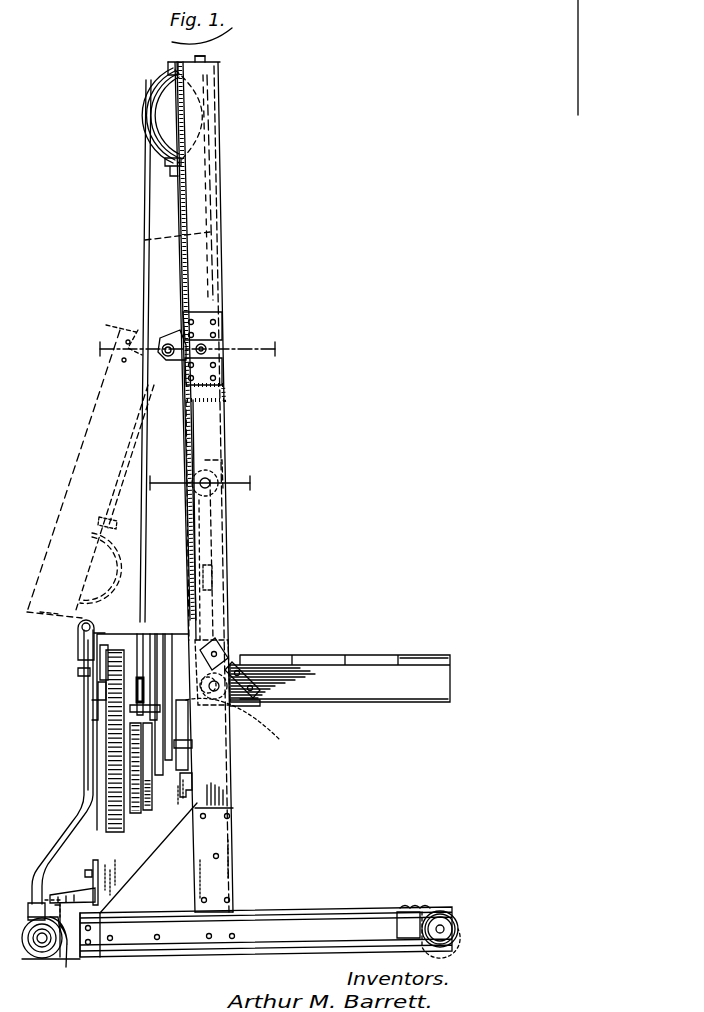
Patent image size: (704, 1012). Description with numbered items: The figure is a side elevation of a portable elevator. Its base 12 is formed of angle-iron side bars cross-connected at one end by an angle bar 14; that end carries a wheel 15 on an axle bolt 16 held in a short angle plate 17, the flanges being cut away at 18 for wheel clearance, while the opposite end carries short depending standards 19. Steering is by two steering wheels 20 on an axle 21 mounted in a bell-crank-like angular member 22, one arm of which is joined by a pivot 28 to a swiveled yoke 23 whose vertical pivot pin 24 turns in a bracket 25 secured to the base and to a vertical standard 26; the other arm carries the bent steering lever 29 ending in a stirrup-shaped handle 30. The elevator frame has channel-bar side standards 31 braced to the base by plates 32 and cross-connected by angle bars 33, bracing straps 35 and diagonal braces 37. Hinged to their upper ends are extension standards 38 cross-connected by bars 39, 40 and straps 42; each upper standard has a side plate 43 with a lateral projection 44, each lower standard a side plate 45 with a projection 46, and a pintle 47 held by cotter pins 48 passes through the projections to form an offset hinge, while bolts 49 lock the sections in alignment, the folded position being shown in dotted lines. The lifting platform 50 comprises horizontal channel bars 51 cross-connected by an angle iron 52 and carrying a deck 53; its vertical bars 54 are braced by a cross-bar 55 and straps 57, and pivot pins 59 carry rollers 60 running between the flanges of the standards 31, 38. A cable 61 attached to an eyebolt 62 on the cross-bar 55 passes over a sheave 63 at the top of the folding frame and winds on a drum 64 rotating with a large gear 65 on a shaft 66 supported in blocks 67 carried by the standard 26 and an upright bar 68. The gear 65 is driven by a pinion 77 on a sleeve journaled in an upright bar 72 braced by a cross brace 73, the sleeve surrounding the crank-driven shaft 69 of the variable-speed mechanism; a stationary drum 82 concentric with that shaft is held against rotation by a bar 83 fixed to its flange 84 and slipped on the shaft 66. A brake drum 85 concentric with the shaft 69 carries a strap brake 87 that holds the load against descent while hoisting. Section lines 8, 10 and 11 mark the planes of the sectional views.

The section line 8- 8 is at (202, 488).
The mast 10 is at (213, 298).
The section line 11- 11 is at (189, 348).
The base 12 is at (333, 904).
The angle bar 14 is at (148, 948).
The wheel 15 is at (443, 949).
The axle bolt 16 is at (440, 924).
The angle plate 17 is at (398, 940).
The cut-away 18 is at (418, 905).
The depending standards 19 is at (90, 956).
The steering wheels 20 is at (38, 948).
The axle 21 is at (38, 943).
The angular member 22 is at (48, 953).
The swiveled yoke 23 is at (64, 958).
The vertical pivot pin 24 is at (73, 893).
The bracket 25 is at (85, 874).
The vertical standard 26 is at (94, 880).
The pivot 28 is at (66, 968).
The steering lever 29 is at (84, 790).
The stirrup-shaped handle 30 is at (97, 688).
The side standards 31 is at (175, 738).
The plates 32 is at (220, 832).
The angle bars 33 is at (188, 806).
The bracing straps 35 is at (186, 500).
The diagonal braces 37 is at (192, 540).
The extension standards 38 is at (222, 236).
The bars 39 is at (107, 506).
The bars 40 is at (218, 66).
The straps 42 is at (168, 342).
The side plate 43 is at (212, 315).
The lateral projection 44 is at (172, 332).
The side plate 45 is at (222, 386).
The lateral projection 46 is at (168, 357).
The pintle 47 is at (162, 345).
The cotter pins 48 is at (164, 354).
The bolts 49 is at (208, 347).
The lifting platform 50 is at (341, 639).
The channel bars 51 is at (358, 703).
The angle iron 52 is at (248, 661).
The deck 53 is at (403, 658).
The vertical bars 54 is at (230, 548).
The cross-bar 55 is at (216, 574).
The straps 57 is at (240, 706).
The pivot pins 59 is at (165, 162).
The rollers 60 is at (214, 475).
The cable 61 is at (160, 238).
The eyebolt 62 is at (198, 578).
The sheave 63 is at (150, 112).
The drum 64 is at (137, 816).
The large gear 65 is at (106, 763).
The shaft 66 is at (178, 776).
The blocks 67 is at (190, 738).
The upright bar 68 is at (192, 746).
The shaft 69 is at (77, 671).
The upright bar 72 is at (92, 710).
The cross brace 73 is at (90, 638).
The pinion 77 is at (99, 645).
The stationary drum 82 is at (138, 638).
The bar 83 is at (236, 726).
The flange 84 is at (150, 706).
The brake drum 85 is at (218, 648).
The strap brake 87 is at (163, 628).